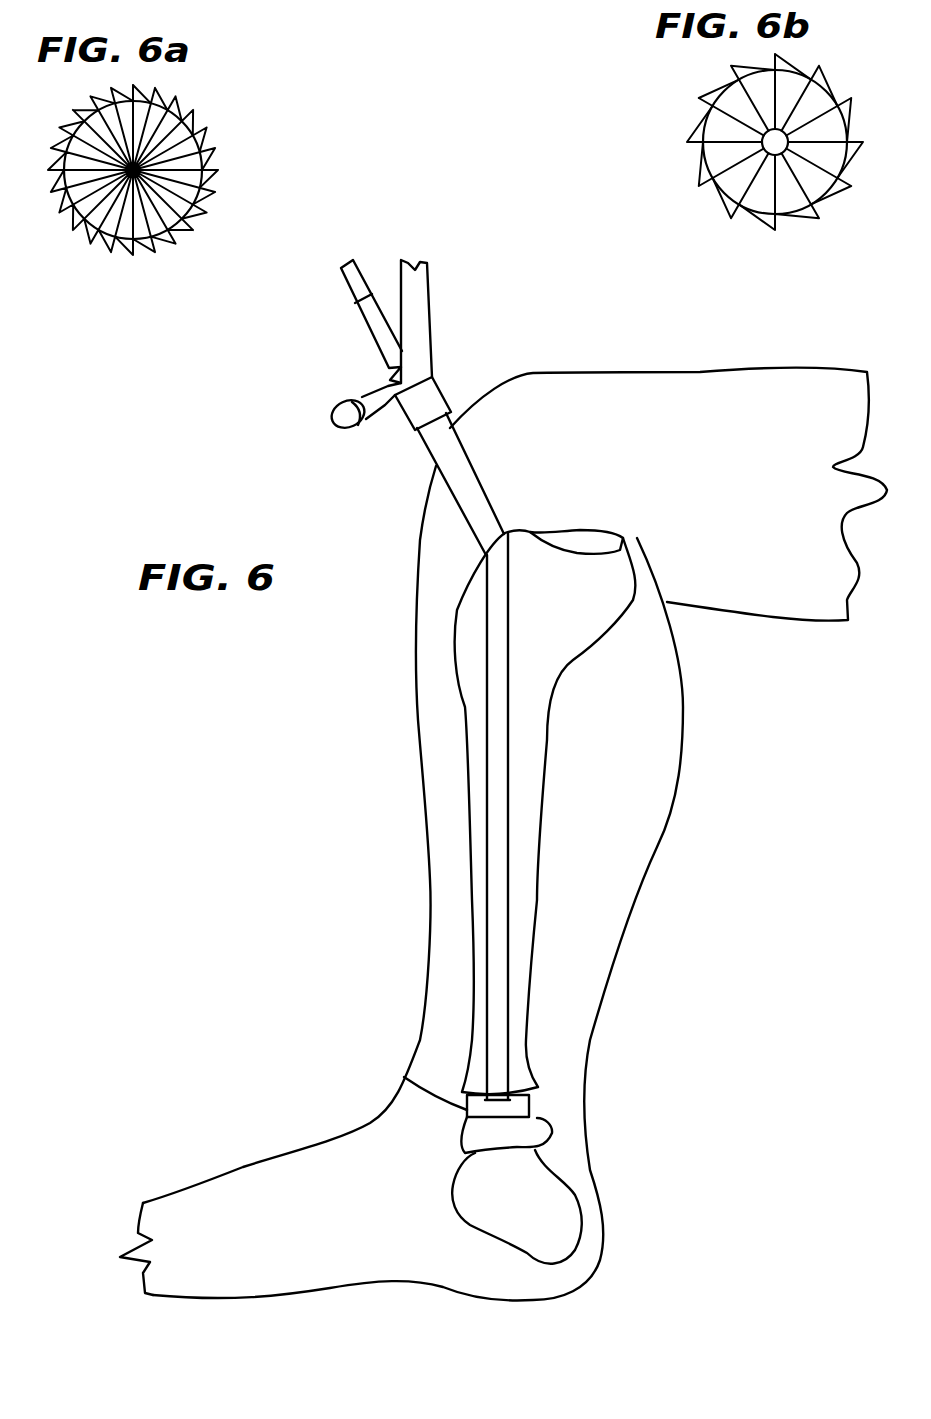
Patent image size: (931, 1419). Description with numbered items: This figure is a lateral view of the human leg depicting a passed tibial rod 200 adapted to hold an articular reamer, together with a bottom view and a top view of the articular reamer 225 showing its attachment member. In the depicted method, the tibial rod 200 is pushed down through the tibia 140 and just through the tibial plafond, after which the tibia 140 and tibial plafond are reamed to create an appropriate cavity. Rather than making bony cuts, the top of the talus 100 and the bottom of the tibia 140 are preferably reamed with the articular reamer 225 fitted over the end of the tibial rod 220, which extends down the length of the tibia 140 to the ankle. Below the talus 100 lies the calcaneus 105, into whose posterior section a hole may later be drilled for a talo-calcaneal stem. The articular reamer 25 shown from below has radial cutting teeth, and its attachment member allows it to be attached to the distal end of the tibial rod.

In FIG. 6A, the reamer head 25 is at (187, 143).
In FIG. 6B, the articular reamer 225 is at (692, 160).
In FIG. 6, the articular reamer 225 is at (465, 1102).
In FIG. 6, the tibial rod 200 is at (437, 463).
In FIG. 6, the tibial rod 220 is at (493, 622).
In FIG. 6, the tibia 140 is at (527, 803).
In FIG. 6, the talus 100 is at (547, 1132).
In FIG. 6, the calcaneus 105 is at (560, 1187).